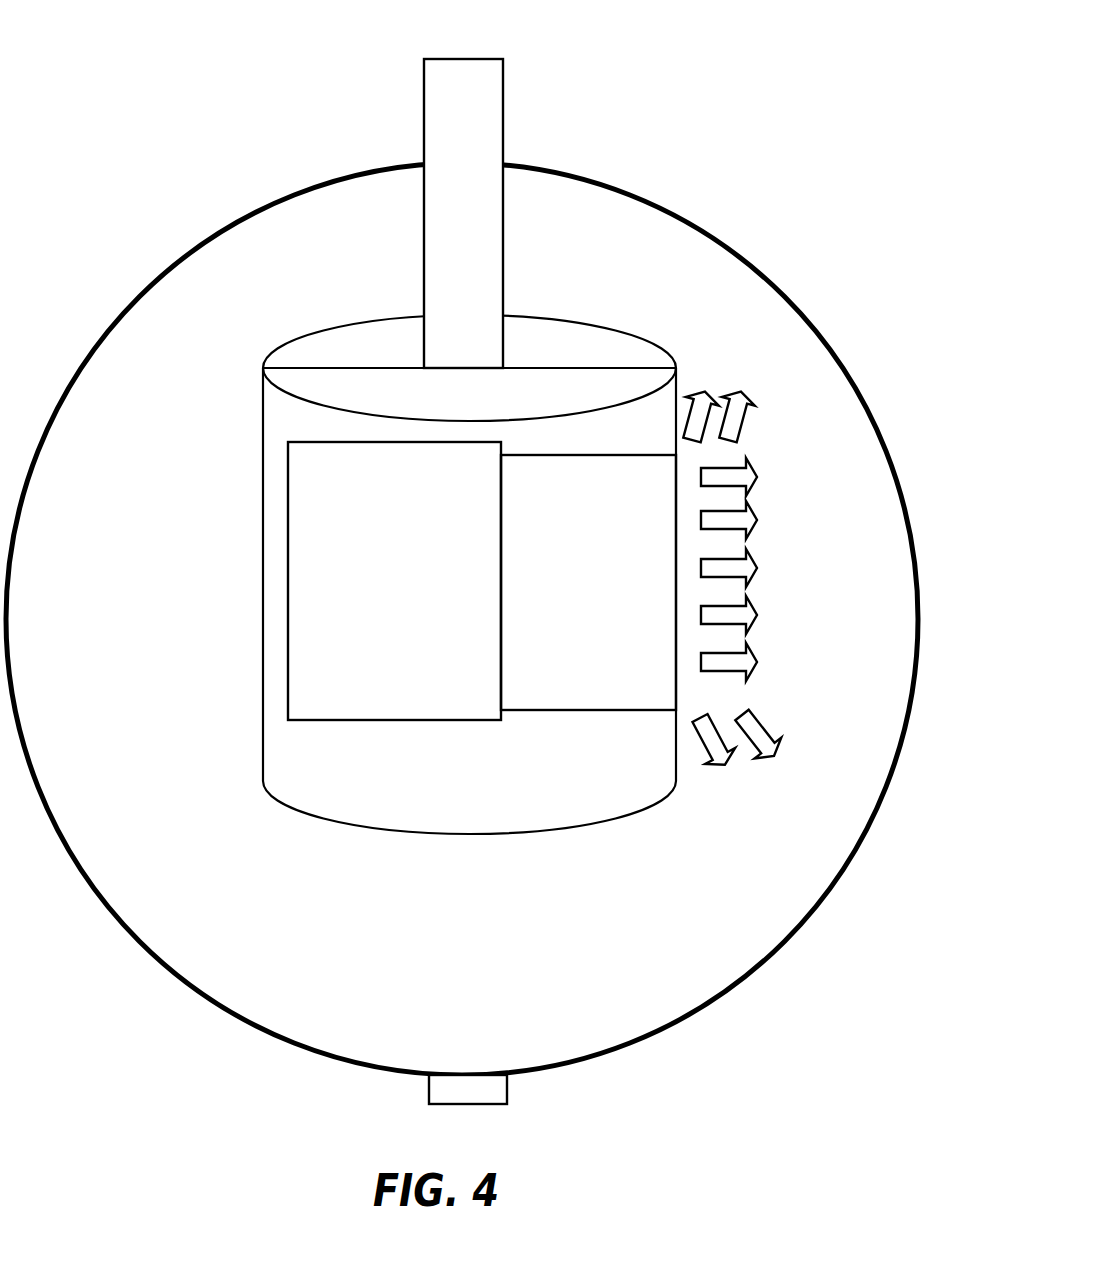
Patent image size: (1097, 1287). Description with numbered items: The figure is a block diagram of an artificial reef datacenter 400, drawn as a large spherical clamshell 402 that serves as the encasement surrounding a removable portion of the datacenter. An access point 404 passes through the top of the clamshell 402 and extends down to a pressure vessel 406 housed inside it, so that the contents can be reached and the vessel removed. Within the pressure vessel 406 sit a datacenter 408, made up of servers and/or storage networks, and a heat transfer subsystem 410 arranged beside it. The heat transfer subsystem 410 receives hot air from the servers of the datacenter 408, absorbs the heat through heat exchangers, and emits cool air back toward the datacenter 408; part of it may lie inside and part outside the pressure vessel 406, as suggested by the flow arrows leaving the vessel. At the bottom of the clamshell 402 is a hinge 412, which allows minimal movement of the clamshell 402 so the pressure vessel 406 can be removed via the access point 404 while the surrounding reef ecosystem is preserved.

The artificial reef datacenter 400 is at (702, 37).
The clamshell 402 is at (690, 216).
The access point 404 is at (422, 133).
The pressure vessel 406 is at (456, 780).
The datacenter 408 is at (373, 509).
The heat transfer subsystem 410 is at (570, 511).
The hinge 412 is at (507, 1086).